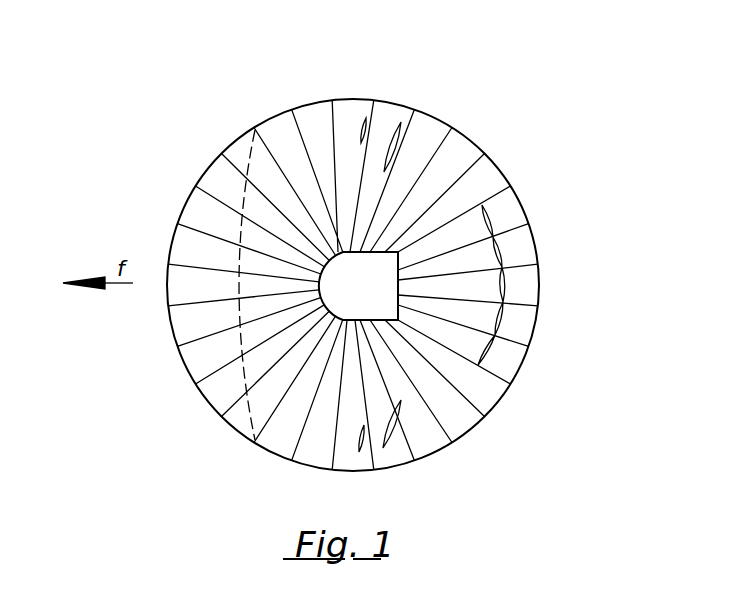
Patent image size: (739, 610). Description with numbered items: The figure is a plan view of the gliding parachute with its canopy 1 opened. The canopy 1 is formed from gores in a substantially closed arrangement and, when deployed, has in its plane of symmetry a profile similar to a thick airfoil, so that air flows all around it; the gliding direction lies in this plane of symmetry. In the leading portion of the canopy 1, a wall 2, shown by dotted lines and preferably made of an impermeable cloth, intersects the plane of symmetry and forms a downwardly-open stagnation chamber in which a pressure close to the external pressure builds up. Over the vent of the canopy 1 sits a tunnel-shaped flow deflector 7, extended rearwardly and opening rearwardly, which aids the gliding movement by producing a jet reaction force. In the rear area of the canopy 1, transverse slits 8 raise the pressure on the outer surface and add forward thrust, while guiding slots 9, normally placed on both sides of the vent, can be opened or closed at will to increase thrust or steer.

The canopy 1 is at (325, 153).
The wall 2 is at (252, 162).
The flow deflector 7 is at (370, 282).
The transverse slits 8 is at (503, 302).
The guiding slots 9 is at (402, 122).